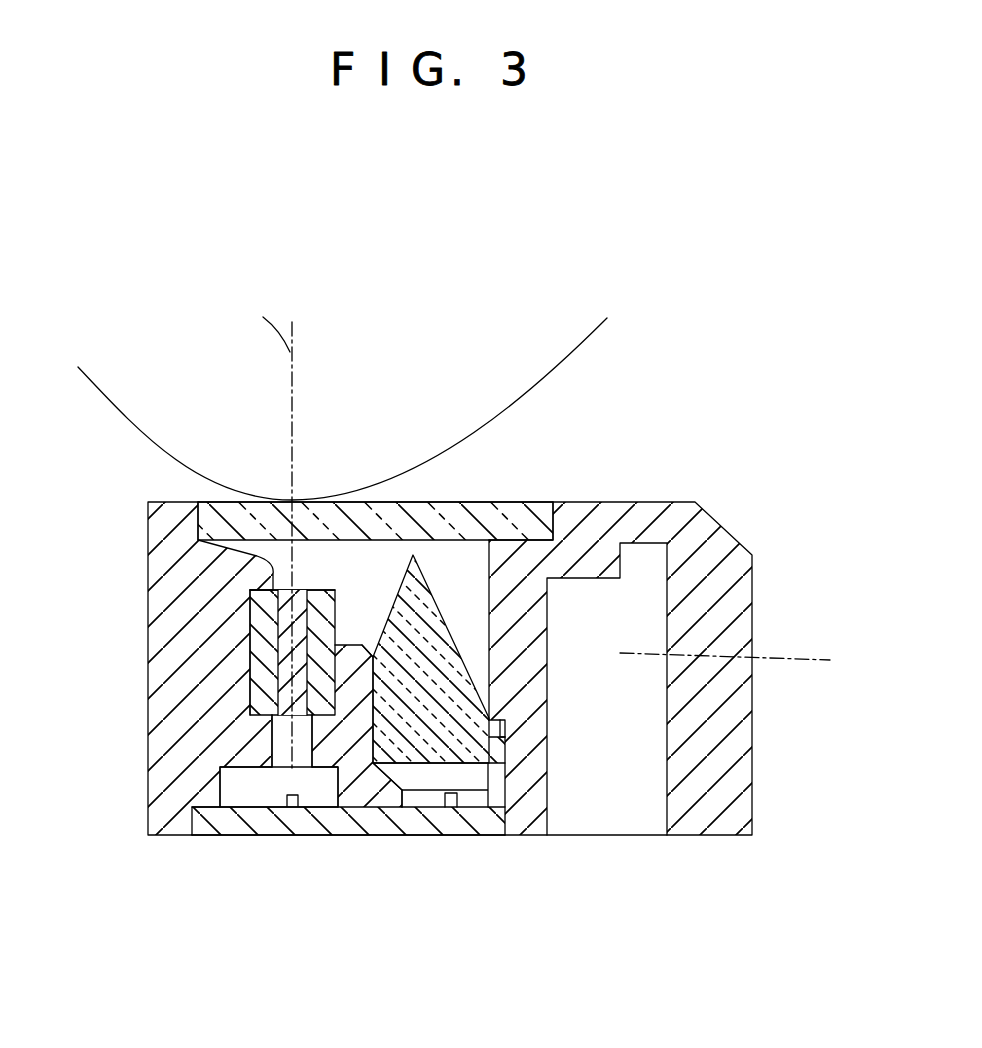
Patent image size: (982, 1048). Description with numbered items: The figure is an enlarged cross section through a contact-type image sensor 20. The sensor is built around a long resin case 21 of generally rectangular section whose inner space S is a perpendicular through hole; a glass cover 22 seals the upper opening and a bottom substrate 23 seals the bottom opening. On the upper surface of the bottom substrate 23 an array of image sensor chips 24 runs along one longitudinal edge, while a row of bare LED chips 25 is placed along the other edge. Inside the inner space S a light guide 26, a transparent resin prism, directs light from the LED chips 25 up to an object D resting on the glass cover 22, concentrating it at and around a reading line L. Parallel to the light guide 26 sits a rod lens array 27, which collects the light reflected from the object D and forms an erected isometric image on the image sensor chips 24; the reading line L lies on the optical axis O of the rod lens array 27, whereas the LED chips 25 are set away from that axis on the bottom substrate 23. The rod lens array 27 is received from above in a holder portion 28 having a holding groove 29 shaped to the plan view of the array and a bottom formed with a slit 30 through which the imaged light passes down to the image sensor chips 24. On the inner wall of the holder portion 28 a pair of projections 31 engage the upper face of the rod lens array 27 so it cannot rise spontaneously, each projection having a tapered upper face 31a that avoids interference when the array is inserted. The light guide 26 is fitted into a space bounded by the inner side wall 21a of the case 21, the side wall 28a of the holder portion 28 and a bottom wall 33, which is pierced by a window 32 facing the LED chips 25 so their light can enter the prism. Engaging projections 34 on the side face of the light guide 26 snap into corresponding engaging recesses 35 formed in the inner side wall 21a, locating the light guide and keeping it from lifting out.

The contact-type image sensor 20 is at (670, 443).
The case 21 is at (752, 582).
The inner side wall 21a is at (488, 587).
The glass cover 22 is at (500, 497).
The bottom substrate 23 is at (455, 838).
The image sensor chips 24 is at (279, 808).
The LED chips 25 is at (452, 808).
The light guide 26 is at (413, 554).
The rod lens array 27 is at (252, 662).
The holder portion 28 is at (252, 690).
The side wall of holder portion 28a is at (388, 660).
The holding groove 29 is at (320, 672).
The slit 30 is at (277, 747).
The projections 31 is at (260, 560).
The tapered upper face 31a is at (270, 522).
The window 32 is at (428, 765).
The bottom wall 33 is at (382, 800).
The engaging projections 34 is at (500, 740).
The engaging recesses 35 is at (505, 725).
The object D is at (150, 432).
The reading line L is at (292, 500).
The optical axis O is at (263, 317).
The inner space S is at (466, 612).